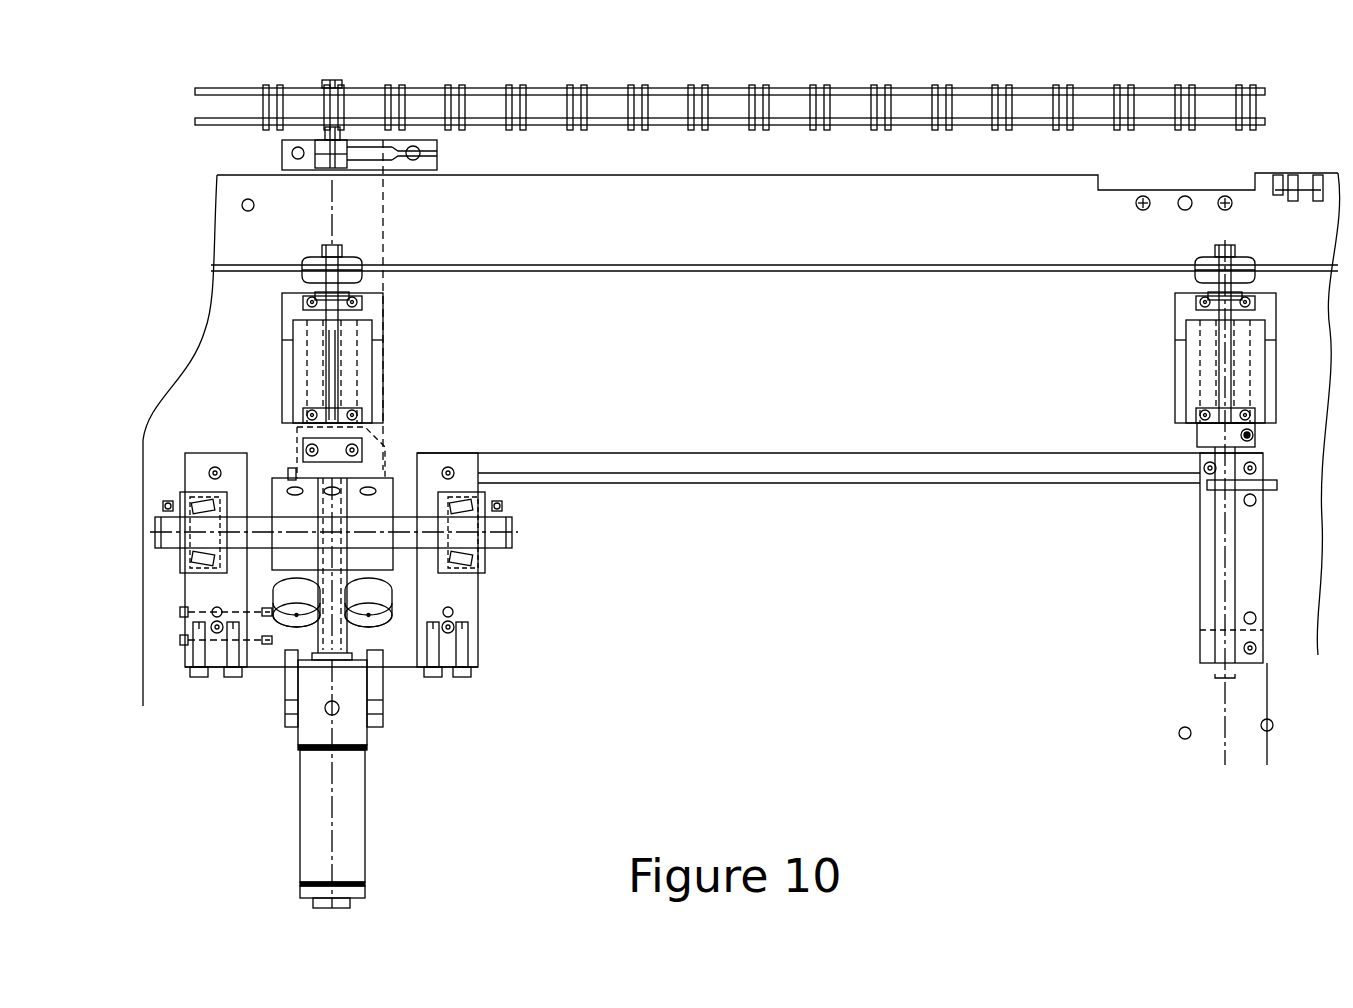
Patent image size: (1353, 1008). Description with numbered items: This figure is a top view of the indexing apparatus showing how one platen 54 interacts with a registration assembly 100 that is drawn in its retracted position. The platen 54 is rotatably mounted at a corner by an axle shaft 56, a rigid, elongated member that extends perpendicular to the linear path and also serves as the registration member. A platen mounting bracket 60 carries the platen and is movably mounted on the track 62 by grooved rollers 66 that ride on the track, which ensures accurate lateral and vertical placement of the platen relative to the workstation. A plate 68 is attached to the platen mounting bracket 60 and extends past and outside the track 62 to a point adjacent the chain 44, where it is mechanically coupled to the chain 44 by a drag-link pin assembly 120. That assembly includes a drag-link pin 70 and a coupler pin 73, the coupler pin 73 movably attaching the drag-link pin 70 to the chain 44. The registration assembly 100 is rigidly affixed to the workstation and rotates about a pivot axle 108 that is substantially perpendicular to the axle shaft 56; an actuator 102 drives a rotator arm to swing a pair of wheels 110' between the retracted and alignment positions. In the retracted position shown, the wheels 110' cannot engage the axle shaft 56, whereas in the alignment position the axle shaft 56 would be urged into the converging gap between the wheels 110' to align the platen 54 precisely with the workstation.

The chain 44 is at (598, 126).
The platen 54 is at (847, 502).
The axle shaft 56 is at (344, 360).
The platen mounting bracket 60 is at (384, 388).
The track 62 is at (515, 273).
The roller 66 is at (304, 263).
The plate 68 is at (385, 210).
The drag-link pin 70 is at (433, 154).
The coupler pin 73 is at (333, 80).
The registration assembly 100 is at (643, 616).
The actuator 102 is at (366, 825).
The pivot axle 108 is at (513, 533).
The wheels 110' is at (335, 658).
The drag-link pin assembly 120 is at (224, 158).